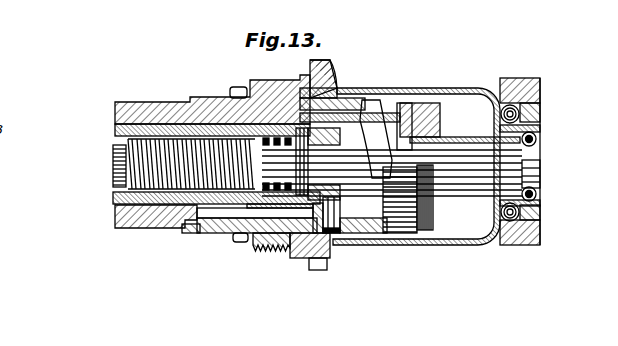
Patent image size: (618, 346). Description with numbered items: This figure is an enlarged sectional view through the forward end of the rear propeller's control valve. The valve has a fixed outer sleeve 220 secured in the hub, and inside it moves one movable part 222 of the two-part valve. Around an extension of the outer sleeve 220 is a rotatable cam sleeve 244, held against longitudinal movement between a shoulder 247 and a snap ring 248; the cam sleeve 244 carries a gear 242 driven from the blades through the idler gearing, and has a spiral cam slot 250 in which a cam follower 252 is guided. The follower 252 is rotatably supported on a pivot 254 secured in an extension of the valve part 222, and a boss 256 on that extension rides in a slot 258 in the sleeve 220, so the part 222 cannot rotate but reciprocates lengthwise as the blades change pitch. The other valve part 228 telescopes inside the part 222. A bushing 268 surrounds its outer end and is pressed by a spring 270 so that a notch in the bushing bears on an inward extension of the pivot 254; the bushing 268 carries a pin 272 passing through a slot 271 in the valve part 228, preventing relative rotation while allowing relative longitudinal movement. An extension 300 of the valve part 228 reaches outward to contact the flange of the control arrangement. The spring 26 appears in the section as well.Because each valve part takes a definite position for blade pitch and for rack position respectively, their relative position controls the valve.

The spring 26 is at (115, 153).
The outer sleeve 220 is at (133, 224).
The movable valve part 222 is at (113, 201).
The valve part 228 is at (342, 182).
The gear 242 is at (213, 226).
The cam sleeve 244 is at (228, 238).
The shoulder 247 is at (172, 236).
The snap ring 248 is at (430, 113).
The spiral cam slot 250 is at (388, 132).
The cam follower 252 is at (344, 226).
The pivot 254 is at (333, 216).
The boss 256 is at (313, 232).
The slot 258 is at (256, 247).
The bushing 268 is at (363, 107).
The spring 270 is at (158, 135).
The slot 271 is at (247, 87).
The pin 272 is at (300, 128).
The extension 300 is at (479, 145).